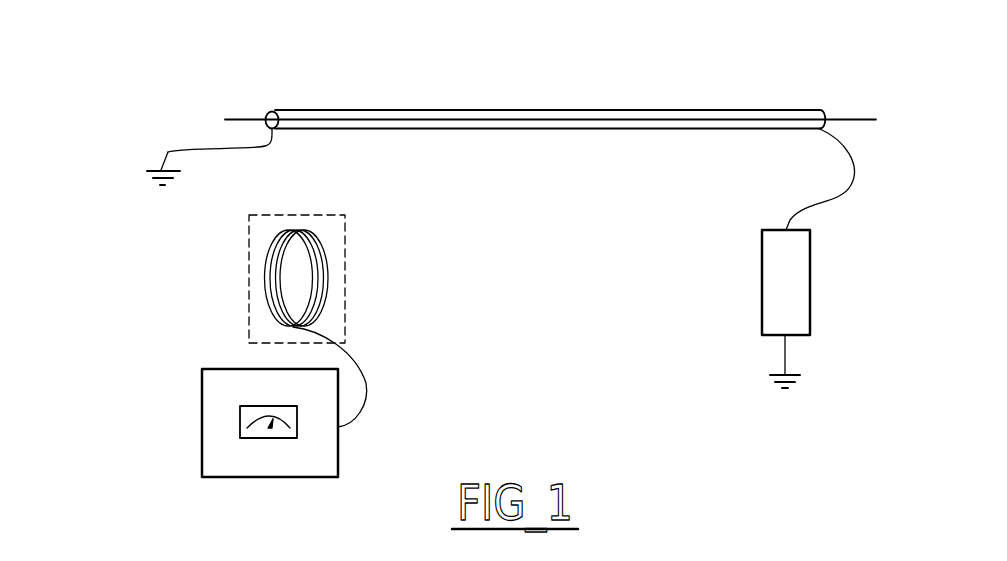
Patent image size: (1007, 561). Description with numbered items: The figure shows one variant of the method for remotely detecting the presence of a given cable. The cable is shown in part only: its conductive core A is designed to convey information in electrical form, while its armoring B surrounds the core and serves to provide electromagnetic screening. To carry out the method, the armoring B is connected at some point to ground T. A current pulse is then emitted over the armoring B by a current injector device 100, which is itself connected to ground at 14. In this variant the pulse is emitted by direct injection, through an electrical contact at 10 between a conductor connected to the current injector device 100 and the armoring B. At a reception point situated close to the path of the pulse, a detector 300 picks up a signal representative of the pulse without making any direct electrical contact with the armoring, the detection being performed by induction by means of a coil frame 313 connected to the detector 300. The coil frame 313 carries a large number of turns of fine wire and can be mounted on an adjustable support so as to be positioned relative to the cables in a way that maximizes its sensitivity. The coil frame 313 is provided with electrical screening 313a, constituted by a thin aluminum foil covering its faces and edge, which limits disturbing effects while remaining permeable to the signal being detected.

The conductive core A is at (240, 118).
The armoring B is at (702, 115).
The ground T is at (168, 152).
The electrical contact 10 is at (820, 131).
The current injector device 100 is at (760, 296).
The ground connection 14 is at (788, 352).
The coil frame 313 is at (324, 236).
The electrical screening 313a is at (248, 292).
The detector 300 is at (183, 415).